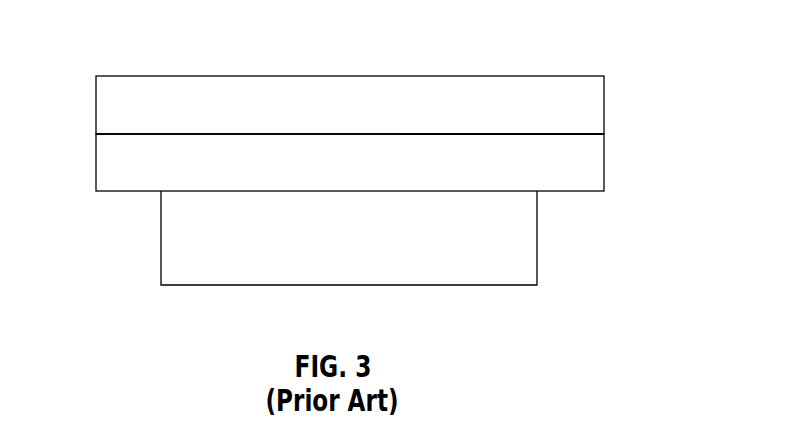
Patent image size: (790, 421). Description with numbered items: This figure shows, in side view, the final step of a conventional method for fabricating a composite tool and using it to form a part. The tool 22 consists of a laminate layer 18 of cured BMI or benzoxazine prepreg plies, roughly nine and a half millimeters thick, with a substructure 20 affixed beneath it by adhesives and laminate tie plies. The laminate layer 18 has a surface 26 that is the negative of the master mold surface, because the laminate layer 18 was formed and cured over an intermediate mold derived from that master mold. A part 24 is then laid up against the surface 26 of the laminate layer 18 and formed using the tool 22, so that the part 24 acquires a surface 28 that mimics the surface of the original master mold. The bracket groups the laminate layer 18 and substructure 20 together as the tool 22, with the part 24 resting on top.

The laminate layer 18 is at (577, 191).
The substructure 20 is at (524, 285).
The tool 22 is at (653, 134).
The part 24 is at (577, 76).
The surface 26 is at (592, 131).
The surface 28 is at (543, 134).